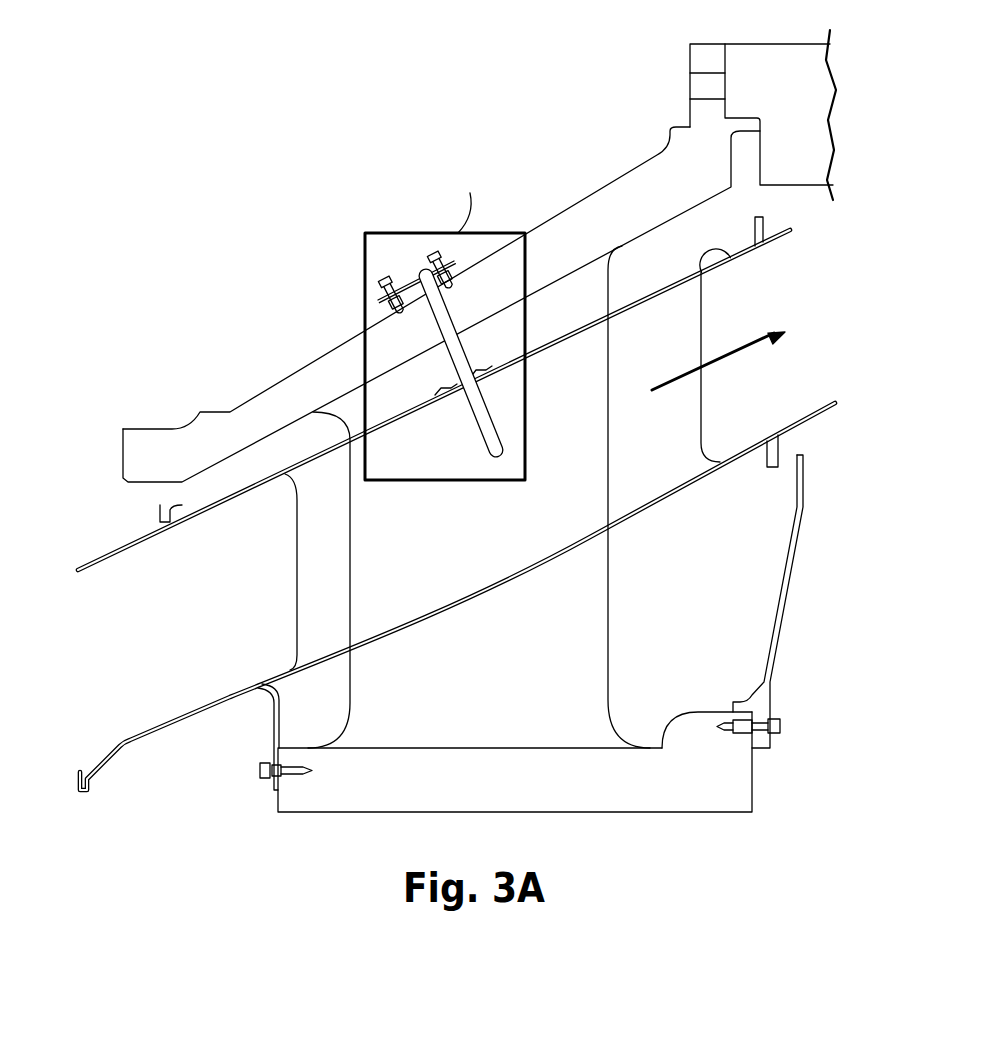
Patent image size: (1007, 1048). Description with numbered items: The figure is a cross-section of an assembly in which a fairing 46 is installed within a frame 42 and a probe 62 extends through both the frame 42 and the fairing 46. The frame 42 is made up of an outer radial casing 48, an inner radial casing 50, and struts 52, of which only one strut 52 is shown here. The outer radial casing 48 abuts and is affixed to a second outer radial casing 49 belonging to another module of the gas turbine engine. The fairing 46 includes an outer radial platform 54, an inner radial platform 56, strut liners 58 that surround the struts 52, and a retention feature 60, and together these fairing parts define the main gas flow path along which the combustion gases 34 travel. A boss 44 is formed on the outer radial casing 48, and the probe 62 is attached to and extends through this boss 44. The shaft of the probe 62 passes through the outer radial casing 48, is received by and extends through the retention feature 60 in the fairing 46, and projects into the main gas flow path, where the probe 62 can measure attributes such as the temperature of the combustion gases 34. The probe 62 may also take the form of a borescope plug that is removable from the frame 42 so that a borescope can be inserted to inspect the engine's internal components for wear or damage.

The combustion gases 34 is at (665, 378).
The frame 42 is at (306, 154).
The boss 44 is at (352, 289).
The fairing 46 is at (185, 735).
The outer radial casing 48 is at (158, 447).
The second outer radial casing 49 is at (794, 96).
The inner radial casing 50 is at (356, 797).
The struts 52 is at (608, 613).
The outer radial platform 54 is at (733, 256).
The inner radial platform 56 is at (217, 700).
The strut liners 58 is at (297, 582).
The retention feature 60 is at (420, 380).
The probe 62 is at (406, 256).